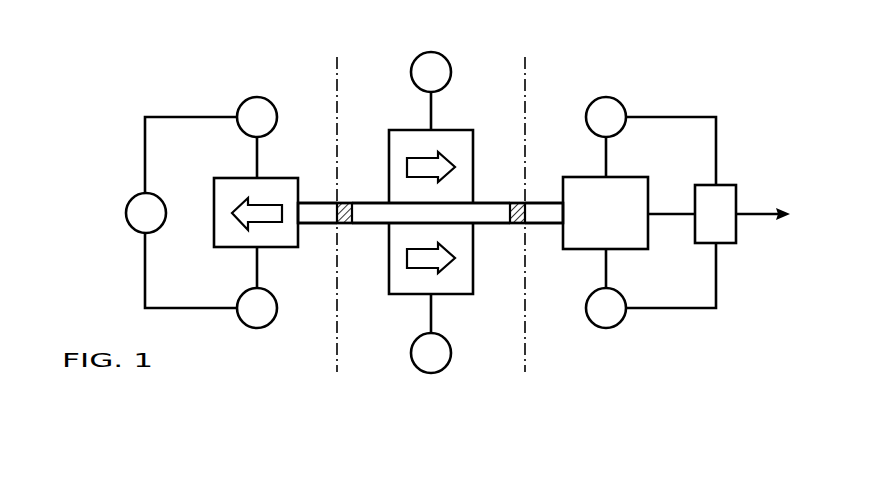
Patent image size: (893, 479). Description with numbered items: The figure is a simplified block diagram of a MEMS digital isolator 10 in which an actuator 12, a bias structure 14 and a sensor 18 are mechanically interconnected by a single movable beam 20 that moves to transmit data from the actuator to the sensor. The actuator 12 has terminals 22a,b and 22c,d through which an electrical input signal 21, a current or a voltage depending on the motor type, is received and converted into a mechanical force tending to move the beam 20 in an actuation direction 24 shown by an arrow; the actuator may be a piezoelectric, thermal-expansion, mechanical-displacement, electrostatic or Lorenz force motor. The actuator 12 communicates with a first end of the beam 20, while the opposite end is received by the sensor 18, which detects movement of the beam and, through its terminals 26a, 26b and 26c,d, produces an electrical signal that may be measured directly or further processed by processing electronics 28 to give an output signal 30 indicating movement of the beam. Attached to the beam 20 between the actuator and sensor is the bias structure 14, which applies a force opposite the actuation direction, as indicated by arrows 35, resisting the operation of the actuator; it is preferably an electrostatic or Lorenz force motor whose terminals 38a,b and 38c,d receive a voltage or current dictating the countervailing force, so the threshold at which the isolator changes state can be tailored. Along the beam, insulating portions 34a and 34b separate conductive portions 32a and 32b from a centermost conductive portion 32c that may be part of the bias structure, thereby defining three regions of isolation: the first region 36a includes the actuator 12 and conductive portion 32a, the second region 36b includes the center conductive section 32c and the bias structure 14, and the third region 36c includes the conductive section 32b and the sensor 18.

The MEMS digital isolator 10 is at (181, 104).
The actuator 12 is at (228, 250).
The bias structure 14 is at (473, 294).
The sensor 18 is at (648, 177).
The movable beam 20 is at (322, 197).
The electrical input signal 21 is at (156, 221).
The actuator terminals 22a,b is at (257, 97).
The actuator terminals 22c,d is at (257, 328).
The actuation direction 24 is at (243, 215).
The sensor terminal 26a is at (620, 104).
The sensor terminal 26b is at (606, 328).
The sensor terminals 26c,d is at (668, 216).
The processing electronics 28 is at (725, 192).
The output signal 30 is at (758, 221).
The conductive portion 32a is at (322, 225).
The conductive portion 32b is at (535, 223).
The centermost conductive portion 32c is at (383, 213).
The insulating portion 34a is at (353, 203).
The insulating portion 34b is at (510, 203).
The bias force arrows 35 is at (452, 263).
The first region of isolation 36a is at (293, 84).
The second region of isolation 36b is at (395, 66).
The third region of isolation 36c is at (569, 81).
The bias structure terminals 38a,b is at (451, 72).
The bias structure terminals 38c,d is at (431, 373).